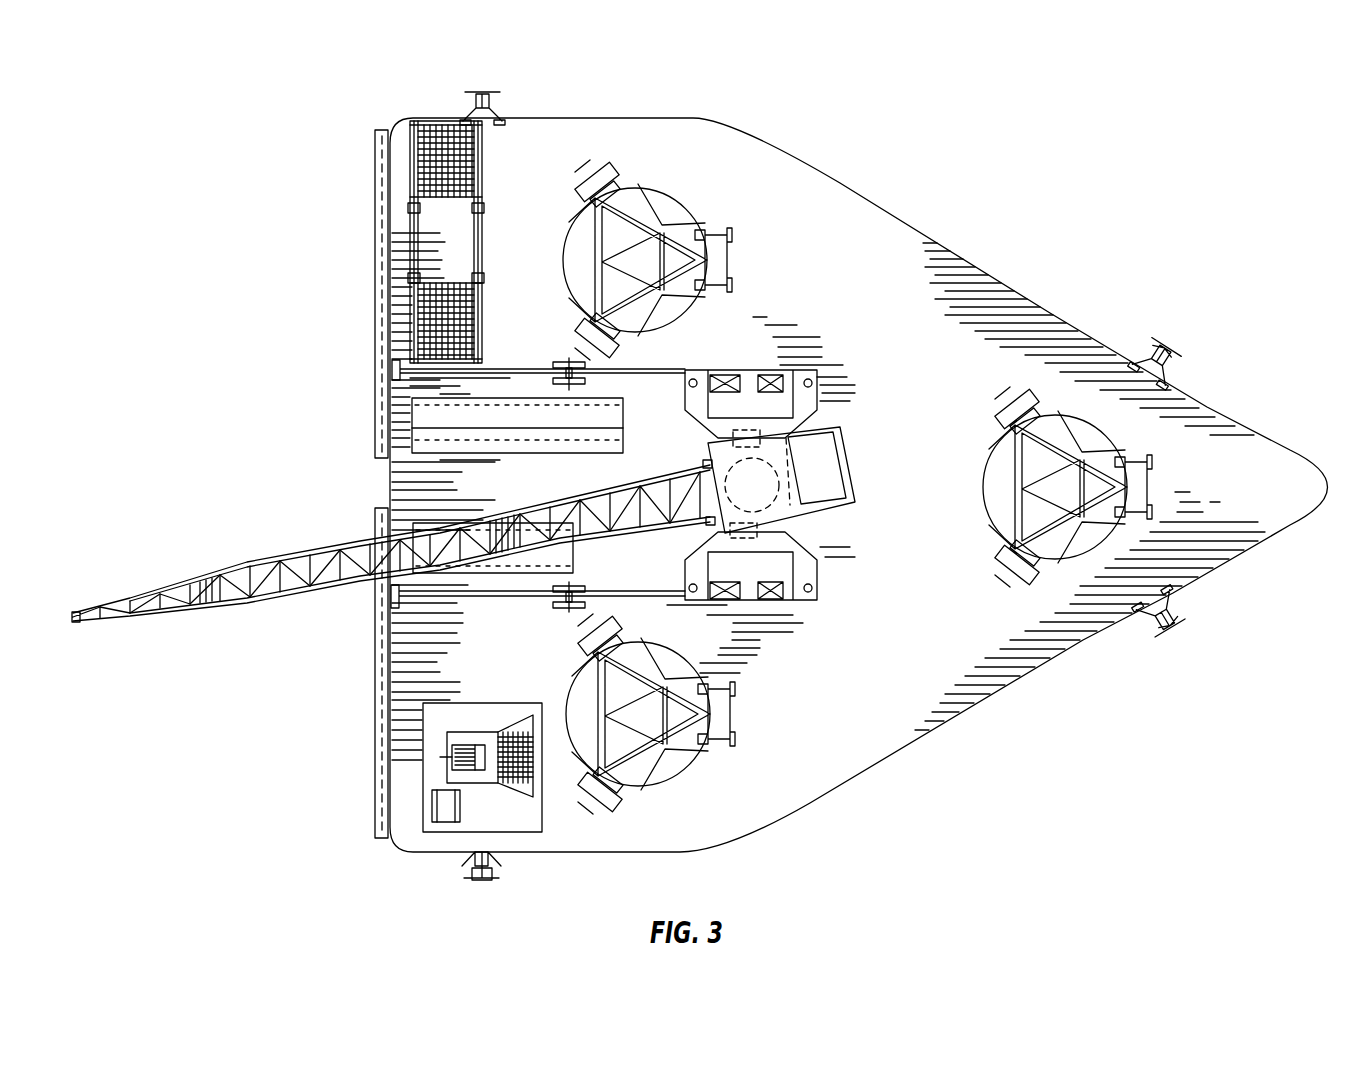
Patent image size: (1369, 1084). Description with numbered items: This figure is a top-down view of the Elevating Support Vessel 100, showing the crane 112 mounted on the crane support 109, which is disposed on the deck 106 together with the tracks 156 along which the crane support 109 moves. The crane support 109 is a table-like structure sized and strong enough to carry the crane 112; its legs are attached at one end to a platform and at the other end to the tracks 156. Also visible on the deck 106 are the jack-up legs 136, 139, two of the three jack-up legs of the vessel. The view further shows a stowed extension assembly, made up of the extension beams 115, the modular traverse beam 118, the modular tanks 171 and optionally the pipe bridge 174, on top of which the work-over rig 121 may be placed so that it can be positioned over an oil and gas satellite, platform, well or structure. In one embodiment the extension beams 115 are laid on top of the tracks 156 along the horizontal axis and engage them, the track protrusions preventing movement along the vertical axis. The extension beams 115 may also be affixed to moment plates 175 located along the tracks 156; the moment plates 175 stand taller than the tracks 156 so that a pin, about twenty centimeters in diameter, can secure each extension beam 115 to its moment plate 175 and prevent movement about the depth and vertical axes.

The Elevating Support Vessel 100 is at (1133, 103).
The deck 106 is at (860, 285).
The crane support 109 is at (700, 427).
The crane 112 is at (812, 502).
The extension beam 115 is at (386, 220).
The modular traverse beam 118 is at (410, 130).
The work-over rig 121 is at (432, 777).
The jack-up leg 136 is at (688, 208).
The jack-up leg 139 is at (985, 492).
The tracks 156 is at (560, 364).
The modular tanks 171 is at (412, 434).
The pipe bridge 174 is at (573, 548).
The moment plates 175 is at (571, 378).